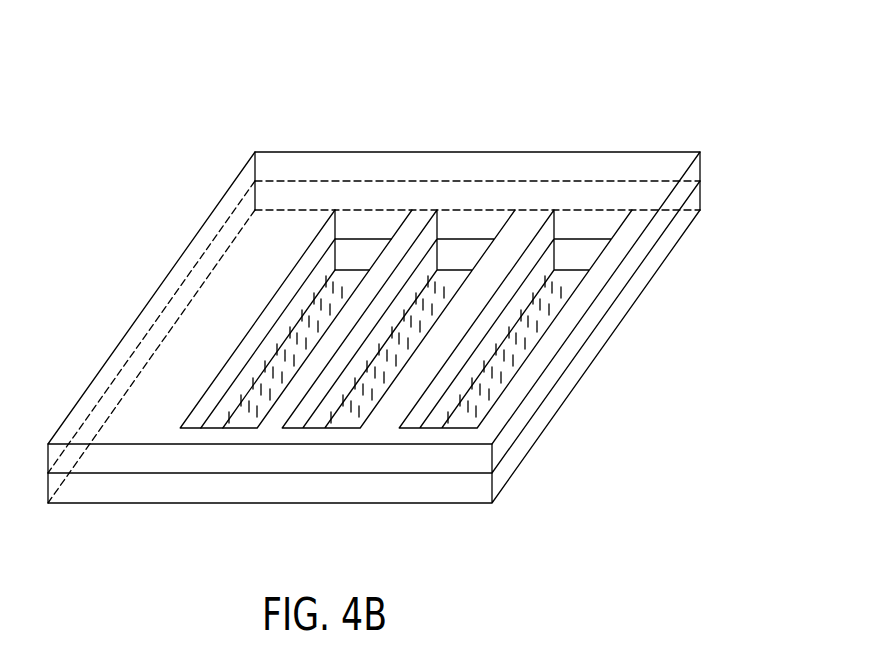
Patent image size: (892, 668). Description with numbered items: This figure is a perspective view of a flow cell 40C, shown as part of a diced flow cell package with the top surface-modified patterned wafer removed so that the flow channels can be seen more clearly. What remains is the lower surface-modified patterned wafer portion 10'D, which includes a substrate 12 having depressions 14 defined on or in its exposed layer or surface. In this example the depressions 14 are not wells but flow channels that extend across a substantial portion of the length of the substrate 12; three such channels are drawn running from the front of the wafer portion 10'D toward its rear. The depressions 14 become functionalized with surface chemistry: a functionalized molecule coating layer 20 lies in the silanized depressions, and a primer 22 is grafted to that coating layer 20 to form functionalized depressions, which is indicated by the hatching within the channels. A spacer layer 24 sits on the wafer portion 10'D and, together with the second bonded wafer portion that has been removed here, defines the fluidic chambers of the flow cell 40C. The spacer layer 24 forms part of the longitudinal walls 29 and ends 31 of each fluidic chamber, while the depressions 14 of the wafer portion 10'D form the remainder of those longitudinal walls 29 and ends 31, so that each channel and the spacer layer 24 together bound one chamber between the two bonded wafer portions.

The flow cell 40C is at (155, 92).
The surface-modified patterned wafer portion 10'D is at (374, 327).
The substrate 12 is at (463, 487).
The spacer layer 24 is at (527, 408).
The functionalized molecule coating layer 20 is at (245, 422).
The longitudinal walls 29 is at (327, 233).
The ends 31 is at (462, 226).
The primer 22 is at (574, 282).
The depressions 14 is at (362, 250).